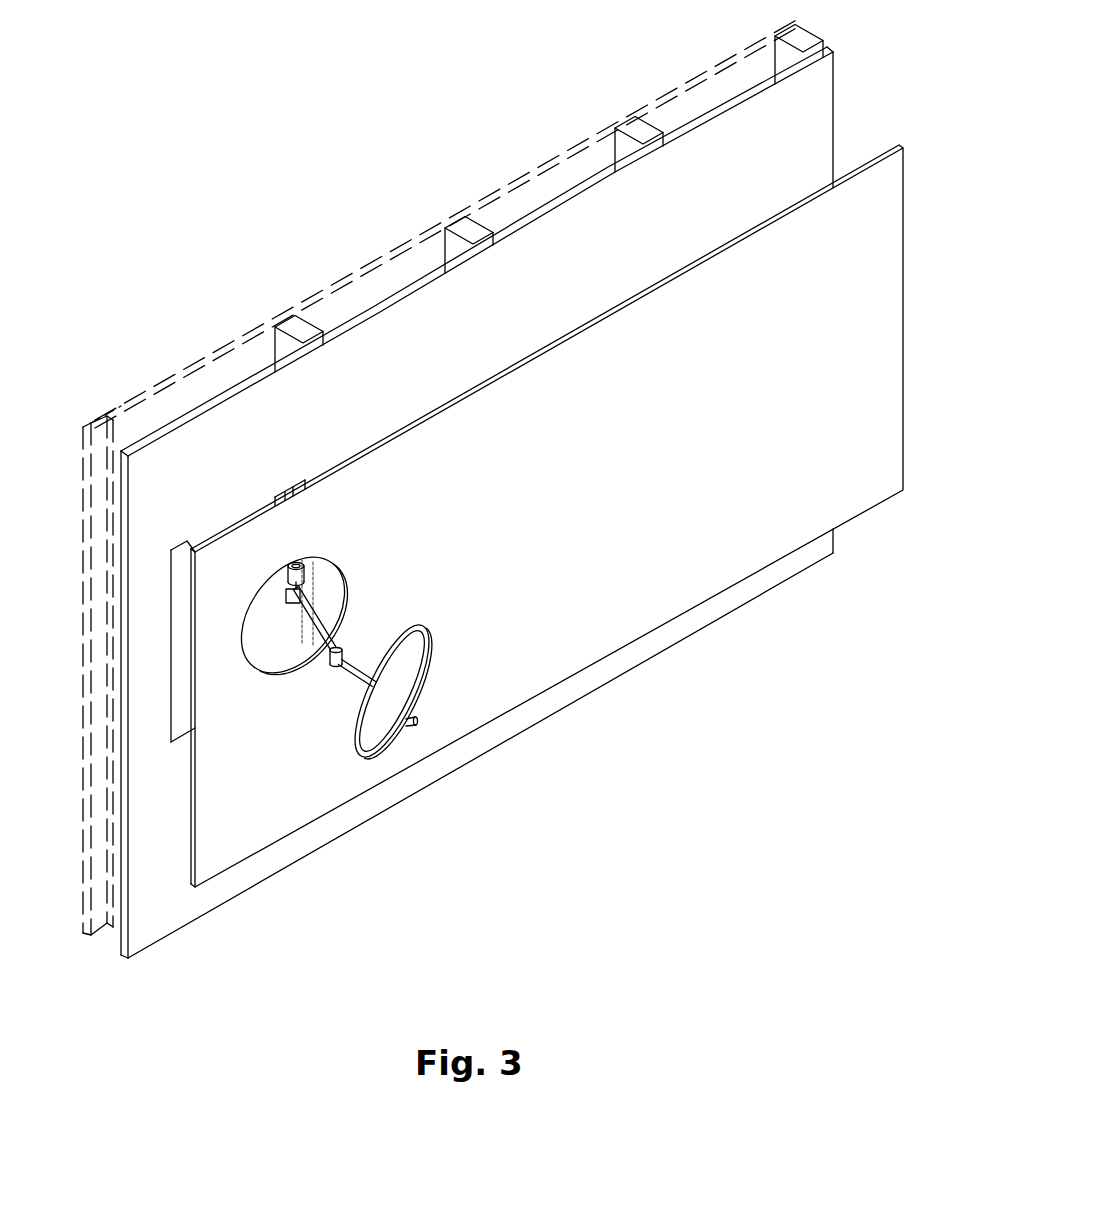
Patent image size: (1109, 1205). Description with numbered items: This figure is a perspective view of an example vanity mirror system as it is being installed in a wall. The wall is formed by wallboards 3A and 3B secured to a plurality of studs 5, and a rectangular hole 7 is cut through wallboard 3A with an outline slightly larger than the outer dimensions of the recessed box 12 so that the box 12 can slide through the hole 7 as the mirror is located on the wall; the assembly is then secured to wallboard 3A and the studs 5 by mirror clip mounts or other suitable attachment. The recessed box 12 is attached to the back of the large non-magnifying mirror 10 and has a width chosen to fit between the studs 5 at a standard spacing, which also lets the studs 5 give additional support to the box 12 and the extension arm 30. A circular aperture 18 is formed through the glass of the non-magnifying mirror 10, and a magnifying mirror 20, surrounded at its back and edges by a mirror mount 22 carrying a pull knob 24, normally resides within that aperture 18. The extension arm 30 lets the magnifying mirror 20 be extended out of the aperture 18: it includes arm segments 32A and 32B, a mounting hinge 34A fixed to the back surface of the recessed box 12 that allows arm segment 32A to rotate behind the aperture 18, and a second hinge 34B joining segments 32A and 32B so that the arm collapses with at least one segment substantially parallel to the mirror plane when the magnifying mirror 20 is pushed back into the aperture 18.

The wallboard 3A is at (836, 51).
The wallboard 3B is at (500, 182).
The studs 5 is at (647, 128).
The rectangular hole 7 is at (302, 479).
The non-magnifying mirror 10 is at (905, 402).
The recessed box 12 is at (181, 716).
The circular aperture 18 is at (337, 567).
The magnifying mirror 20 is at (400, 703).
The mirror mount 22 is at (367, 753).
The knob 24 is at (418, 722).
The extension arm 30 is at (340, 648).
The arm segment 32A is at (329, 645).
The arm segment 32B is at (356, 676).
The mounting hinge 34A is at (292, 605).
The second hinge 34B is at (341, 649).